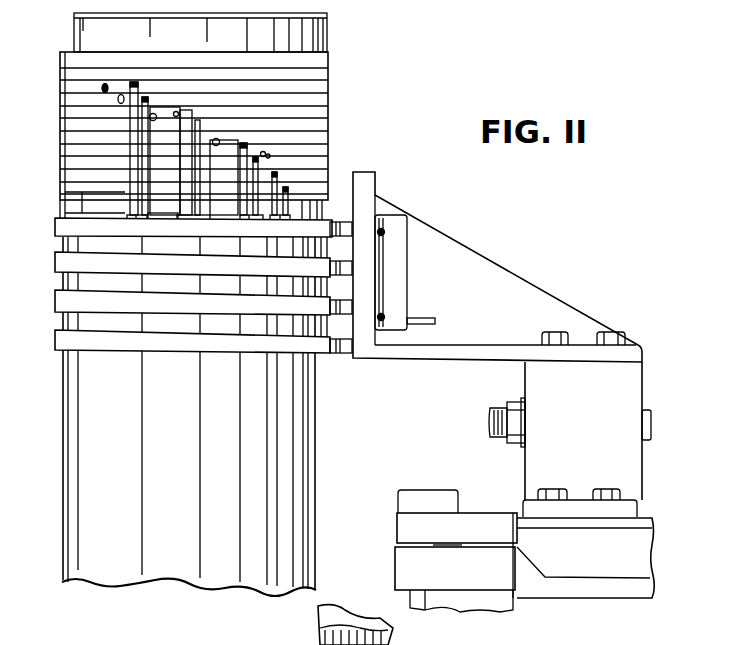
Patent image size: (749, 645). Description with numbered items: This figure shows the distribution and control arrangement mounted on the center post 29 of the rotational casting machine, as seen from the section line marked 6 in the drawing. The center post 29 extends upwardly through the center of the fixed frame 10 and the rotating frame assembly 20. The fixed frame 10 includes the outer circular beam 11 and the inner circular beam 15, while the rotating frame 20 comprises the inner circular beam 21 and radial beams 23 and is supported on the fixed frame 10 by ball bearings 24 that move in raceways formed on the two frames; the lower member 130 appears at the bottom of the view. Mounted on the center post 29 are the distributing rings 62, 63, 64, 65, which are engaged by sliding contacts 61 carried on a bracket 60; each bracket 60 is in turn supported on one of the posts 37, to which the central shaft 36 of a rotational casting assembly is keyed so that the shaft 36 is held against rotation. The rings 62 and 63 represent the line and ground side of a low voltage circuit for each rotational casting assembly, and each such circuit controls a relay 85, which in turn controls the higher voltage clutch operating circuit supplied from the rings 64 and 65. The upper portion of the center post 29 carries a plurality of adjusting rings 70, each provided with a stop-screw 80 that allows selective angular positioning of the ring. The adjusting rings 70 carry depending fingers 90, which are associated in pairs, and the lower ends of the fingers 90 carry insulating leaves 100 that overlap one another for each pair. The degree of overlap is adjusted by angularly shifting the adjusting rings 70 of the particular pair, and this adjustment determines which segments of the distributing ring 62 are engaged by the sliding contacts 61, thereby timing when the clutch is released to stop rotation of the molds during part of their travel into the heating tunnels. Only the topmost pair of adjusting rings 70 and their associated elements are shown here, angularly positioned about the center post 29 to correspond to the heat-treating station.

The section line 6- 6 is at (227, 143).
The fixed frame 10 is at (487, 608).
The outer circular beam 11 is at (628, 593).
The inner circular beam 15 is at (403, 563).
The rotating frame assembly 20 is at (658, 551).
The inner circular beam 21 is at (487, 515).
The radial beams 23 is at (647, 523).
The ball bearings 24 is at (442, 545).
The center post 29 is at (72, 388).
The central shaft 36 is at (648, 422).
The post 37 is at (631, 382).
The bracket 60 is at (496, 275).
The sliding contacts 61 is at (347, 238).
The distributing ring 62 is at (77, 227).
The distributing ring 63 is at (63, 257).
The distributing ring 64 is at (63, 300).
The distributing ring 65 is at (63, 338).
The adjusting rings 70 is at (330, 55).
The stop-screw 80 is at (121, 95).
The relay 85 is at (393, 290).
The depending fingers 90 is at (203, 211).
The insulating leaves 100 is at (192, 230).
The lower member 130 is at (390, 625).